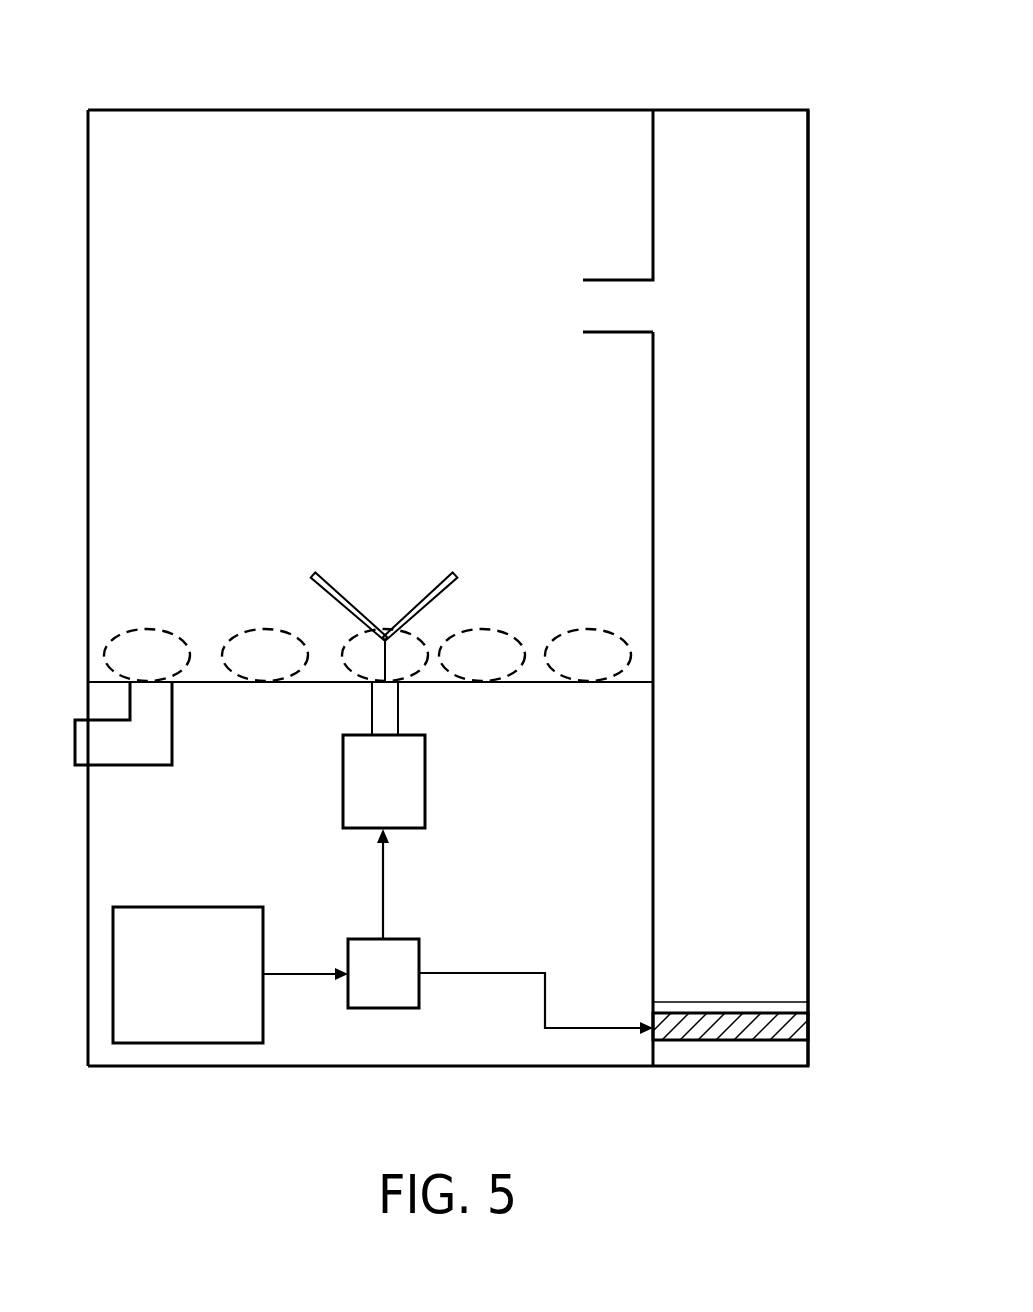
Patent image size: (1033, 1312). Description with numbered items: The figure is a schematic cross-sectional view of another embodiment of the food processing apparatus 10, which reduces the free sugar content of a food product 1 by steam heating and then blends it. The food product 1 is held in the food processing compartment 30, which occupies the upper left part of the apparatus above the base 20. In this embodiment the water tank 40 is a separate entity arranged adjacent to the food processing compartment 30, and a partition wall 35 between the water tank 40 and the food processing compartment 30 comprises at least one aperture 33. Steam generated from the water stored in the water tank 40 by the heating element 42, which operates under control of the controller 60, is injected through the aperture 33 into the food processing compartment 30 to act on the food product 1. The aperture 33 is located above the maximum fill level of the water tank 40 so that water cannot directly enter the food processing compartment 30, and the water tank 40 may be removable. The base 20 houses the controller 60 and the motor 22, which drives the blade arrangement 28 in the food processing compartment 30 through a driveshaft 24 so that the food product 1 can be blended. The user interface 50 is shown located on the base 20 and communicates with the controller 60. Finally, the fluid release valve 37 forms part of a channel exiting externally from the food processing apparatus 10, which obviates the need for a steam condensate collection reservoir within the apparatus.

The food processing apparatus 10 is at (104, 78).
The food processing compartment 30 is at (88, 333).
The base 20 is at (88, 808).
The water tank 40 is at (808, 713).
The aperture 33 is at (592, 305).
The partition wall 35 is at (653, 405).
The food product 1 is at (123, 650).
The blade arrangement 28 is at (327, 575).
The driveshaft 24 is at (398, 705).
The motor 22 is at (425, 777).
The fluid release valve 37 is at (88, 745).
The user interface 50 is at (123, 968).
The controller 60 is at (419, 995).
The heating element 42 is at (808, 1025).